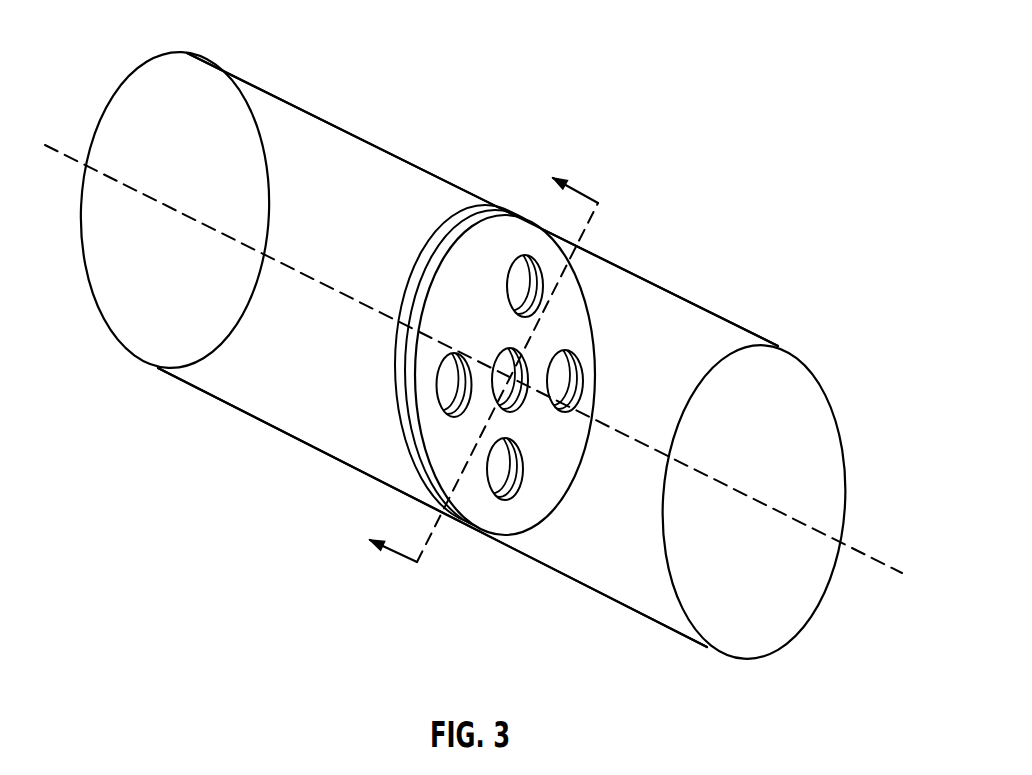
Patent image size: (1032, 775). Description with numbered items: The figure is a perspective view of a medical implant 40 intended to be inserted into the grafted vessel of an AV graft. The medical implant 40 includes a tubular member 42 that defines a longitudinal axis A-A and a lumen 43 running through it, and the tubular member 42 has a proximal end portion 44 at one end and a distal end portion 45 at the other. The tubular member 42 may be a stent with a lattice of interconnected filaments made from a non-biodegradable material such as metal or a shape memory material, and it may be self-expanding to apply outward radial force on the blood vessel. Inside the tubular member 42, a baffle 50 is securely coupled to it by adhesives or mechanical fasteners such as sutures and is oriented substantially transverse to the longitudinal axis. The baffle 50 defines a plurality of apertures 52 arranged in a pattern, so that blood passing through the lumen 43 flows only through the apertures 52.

The medical implant 40 is at (473, 336).
The tubular member 42 is at (716, 311).
The lumen 43 is at (637, 572).
The proximal end portion 44 is at (183, 52).
The distal end portion 45 is at (815, 373).
The baffle 50 is at (526, 348).
The aperture 52 is at (517, 283).